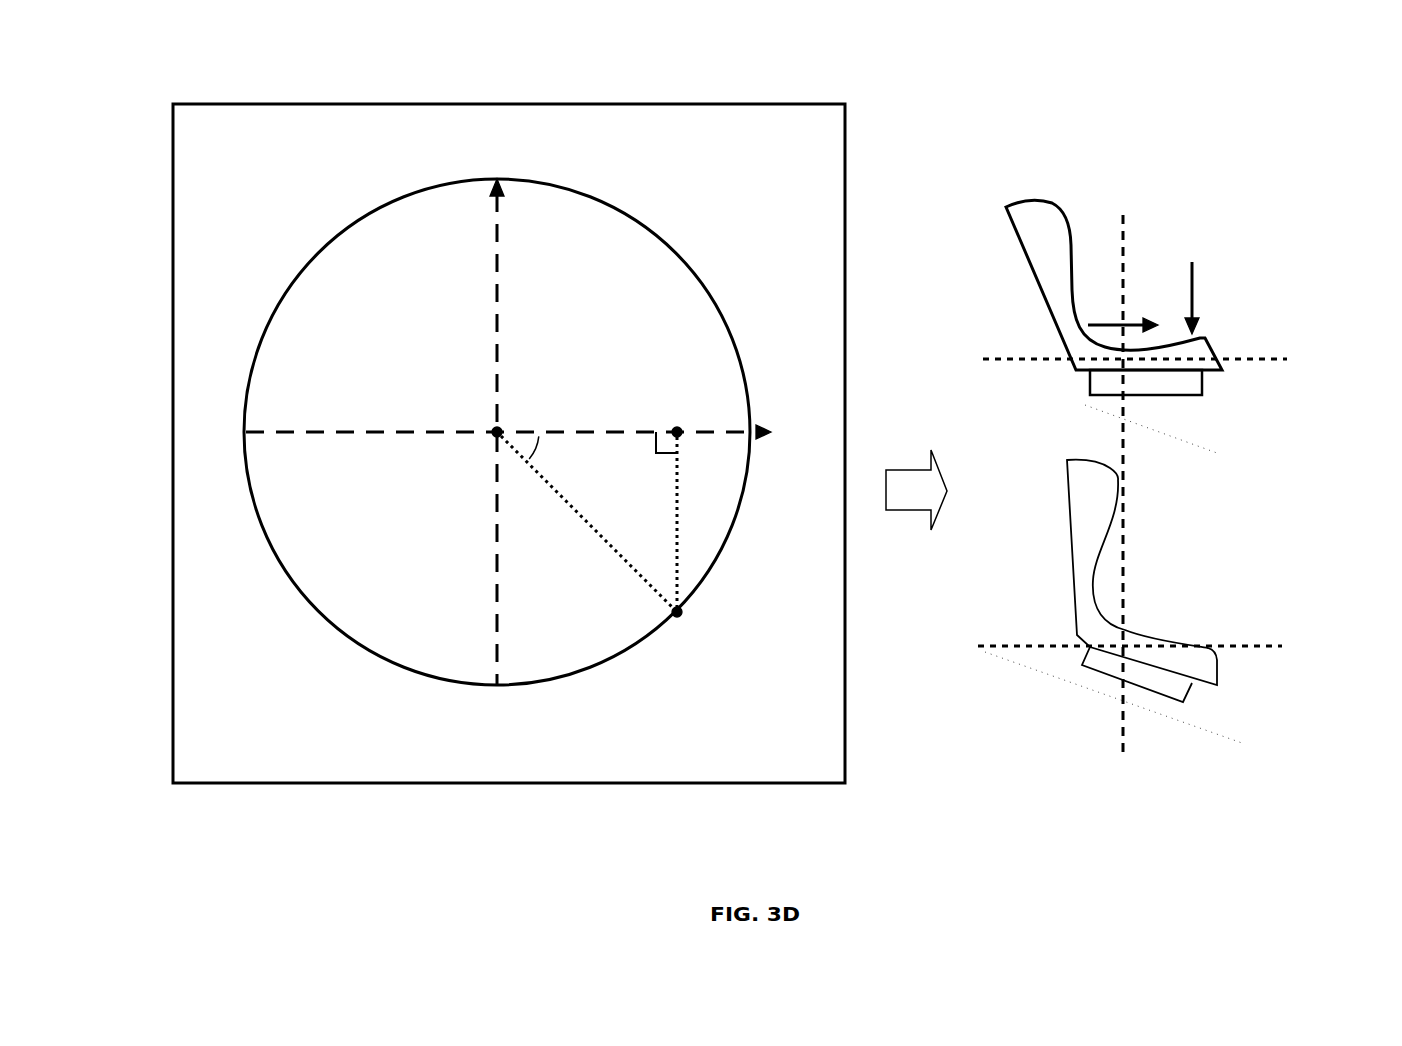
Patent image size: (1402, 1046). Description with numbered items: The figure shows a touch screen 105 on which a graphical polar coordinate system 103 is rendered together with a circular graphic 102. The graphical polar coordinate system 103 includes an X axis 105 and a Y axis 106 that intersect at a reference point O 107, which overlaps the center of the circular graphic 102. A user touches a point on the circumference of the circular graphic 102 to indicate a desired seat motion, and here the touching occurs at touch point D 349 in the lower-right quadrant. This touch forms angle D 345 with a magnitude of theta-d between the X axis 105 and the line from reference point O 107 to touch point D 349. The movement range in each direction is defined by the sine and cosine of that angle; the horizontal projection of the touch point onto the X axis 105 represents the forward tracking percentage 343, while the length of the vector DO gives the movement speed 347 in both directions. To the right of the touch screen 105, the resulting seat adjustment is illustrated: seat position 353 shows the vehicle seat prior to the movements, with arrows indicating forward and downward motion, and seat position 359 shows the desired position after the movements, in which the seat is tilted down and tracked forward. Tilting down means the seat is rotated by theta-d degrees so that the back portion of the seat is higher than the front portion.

The circular graphic 102 is at (315, 258).
The graphical polar coordinate system 103 is at (703, 200).
The touch screen 105 is at (189, 452).
The Y axis 106 is at (481, 157).
The reference point O 107 is at (444, 422).
The forward tracking percentage 343 is at (603, 428).
The angle D 345 is at (547, 467).
The movement speed (vector magnitude DO) 347 is at (590, 518).
The touch point D 349 is at (724, 681).
The seat position prior to adjustment 353 is at (1178, 232).
The seat position after adjustment 359 is at (1168, 592).